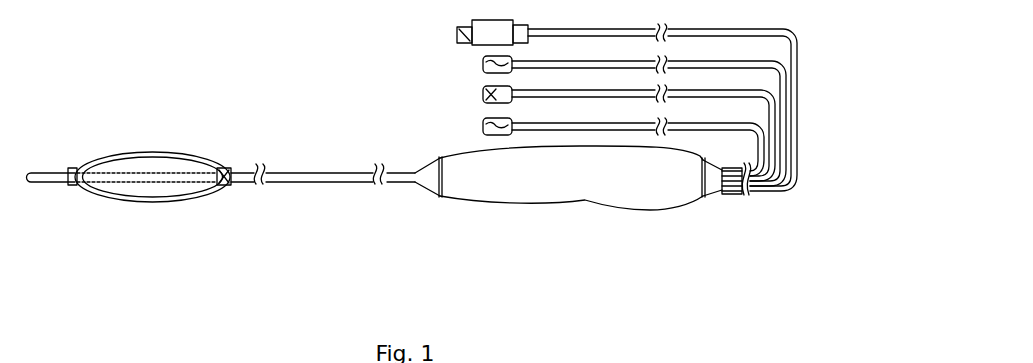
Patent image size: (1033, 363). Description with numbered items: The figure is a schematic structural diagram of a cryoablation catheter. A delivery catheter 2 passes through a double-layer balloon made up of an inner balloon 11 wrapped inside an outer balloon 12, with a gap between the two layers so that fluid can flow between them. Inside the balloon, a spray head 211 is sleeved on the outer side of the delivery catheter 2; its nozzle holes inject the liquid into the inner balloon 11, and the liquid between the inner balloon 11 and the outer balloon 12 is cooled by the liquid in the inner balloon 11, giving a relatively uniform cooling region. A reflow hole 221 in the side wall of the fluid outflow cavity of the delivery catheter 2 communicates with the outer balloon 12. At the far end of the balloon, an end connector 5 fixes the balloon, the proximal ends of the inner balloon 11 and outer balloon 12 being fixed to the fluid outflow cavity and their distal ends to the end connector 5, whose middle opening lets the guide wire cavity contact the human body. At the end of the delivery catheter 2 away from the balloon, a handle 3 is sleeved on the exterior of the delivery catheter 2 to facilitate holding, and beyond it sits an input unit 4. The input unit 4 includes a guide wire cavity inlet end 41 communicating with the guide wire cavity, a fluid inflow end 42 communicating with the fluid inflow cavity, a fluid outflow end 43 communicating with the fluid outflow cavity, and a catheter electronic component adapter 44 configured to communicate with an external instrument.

The delivery catheter 2 is at (388, 190).
The handle 3 is at (518, 190).
The input unit 4 is at (357, 133).
The end connector 5 is at (50, 184).
The inner balloon 11 is at (178, 203).
The outer balloon 12 is at (118, 203).
The guide wire cavity inlet end 41 is at (483, 124).
The fluid inflow end 42 is at (483, 90).
The fluid outflow end 43 is at (483, 62).
The catheter electronic component adapter 44 is at (457, 27).
The spray head 211 is at (232, 198).
The reflow hole 221 is at (281, 192).